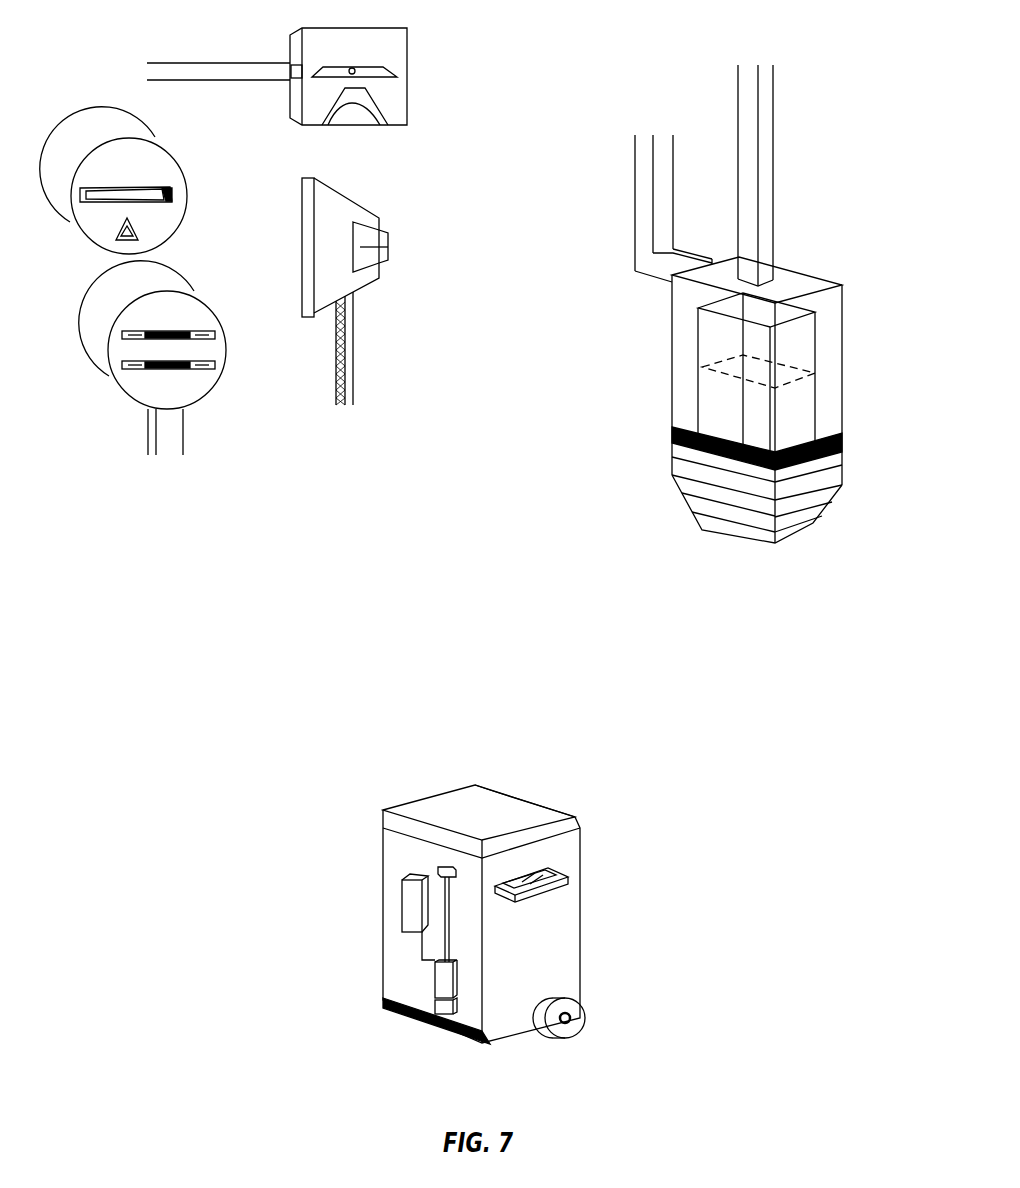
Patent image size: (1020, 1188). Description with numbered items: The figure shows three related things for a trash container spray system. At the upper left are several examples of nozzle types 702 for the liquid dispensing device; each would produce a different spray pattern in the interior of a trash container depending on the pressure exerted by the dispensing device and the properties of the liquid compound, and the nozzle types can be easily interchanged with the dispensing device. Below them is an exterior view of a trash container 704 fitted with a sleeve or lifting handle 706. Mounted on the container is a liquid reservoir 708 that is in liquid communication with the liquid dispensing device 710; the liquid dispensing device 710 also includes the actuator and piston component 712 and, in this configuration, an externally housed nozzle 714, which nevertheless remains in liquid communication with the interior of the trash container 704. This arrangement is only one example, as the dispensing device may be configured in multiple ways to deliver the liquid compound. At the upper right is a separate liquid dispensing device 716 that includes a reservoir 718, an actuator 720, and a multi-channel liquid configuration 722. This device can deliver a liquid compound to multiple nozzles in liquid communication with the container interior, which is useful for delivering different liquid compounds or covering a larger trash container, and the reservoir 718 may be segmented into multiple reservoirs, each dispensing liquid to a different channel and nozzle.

The nozzle types 702 is at (233, 500).
The trash container 704 is at (437, 787).
The sleeve or lifting handle 706 is at (574, 866).
The liquid reservoir 708 is at (391, 906).
The liquid dispensing device 710 is at (462, 975).
The actuator and piston component 712 is at (423, 1000).
The externally housed nozzle 714 is at (421, 867).
The liquid dispensing device 716 is at (848, 278).
The reservoir 718 is at (718, 401).
The actuator 720 is at (679, 506).
The multi-channel liquid configuration 722 is at (730, 98).